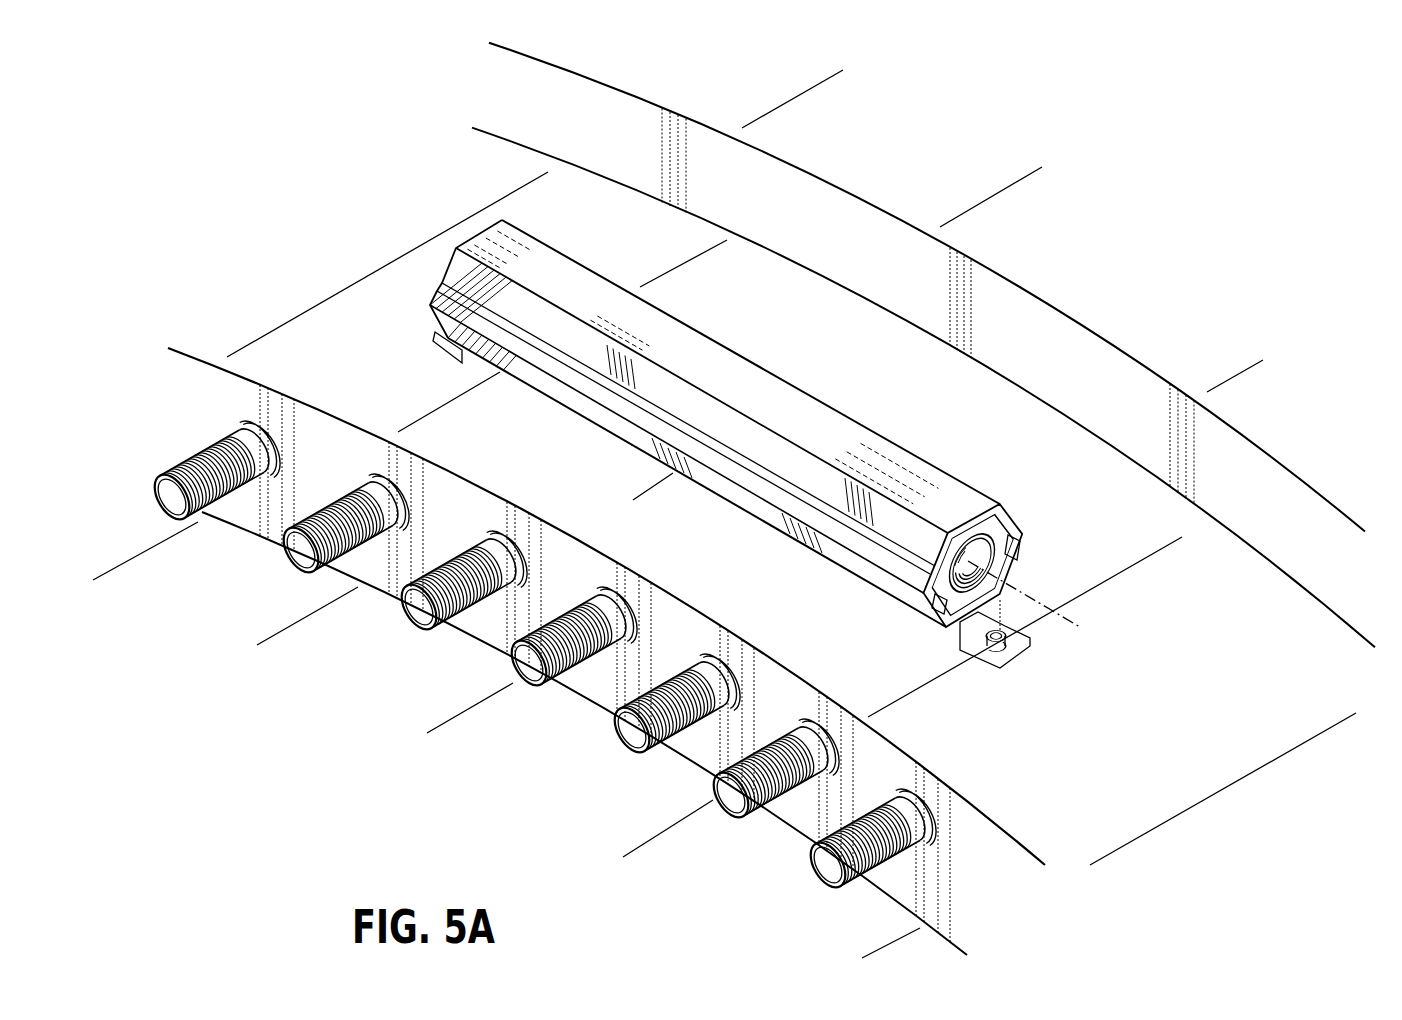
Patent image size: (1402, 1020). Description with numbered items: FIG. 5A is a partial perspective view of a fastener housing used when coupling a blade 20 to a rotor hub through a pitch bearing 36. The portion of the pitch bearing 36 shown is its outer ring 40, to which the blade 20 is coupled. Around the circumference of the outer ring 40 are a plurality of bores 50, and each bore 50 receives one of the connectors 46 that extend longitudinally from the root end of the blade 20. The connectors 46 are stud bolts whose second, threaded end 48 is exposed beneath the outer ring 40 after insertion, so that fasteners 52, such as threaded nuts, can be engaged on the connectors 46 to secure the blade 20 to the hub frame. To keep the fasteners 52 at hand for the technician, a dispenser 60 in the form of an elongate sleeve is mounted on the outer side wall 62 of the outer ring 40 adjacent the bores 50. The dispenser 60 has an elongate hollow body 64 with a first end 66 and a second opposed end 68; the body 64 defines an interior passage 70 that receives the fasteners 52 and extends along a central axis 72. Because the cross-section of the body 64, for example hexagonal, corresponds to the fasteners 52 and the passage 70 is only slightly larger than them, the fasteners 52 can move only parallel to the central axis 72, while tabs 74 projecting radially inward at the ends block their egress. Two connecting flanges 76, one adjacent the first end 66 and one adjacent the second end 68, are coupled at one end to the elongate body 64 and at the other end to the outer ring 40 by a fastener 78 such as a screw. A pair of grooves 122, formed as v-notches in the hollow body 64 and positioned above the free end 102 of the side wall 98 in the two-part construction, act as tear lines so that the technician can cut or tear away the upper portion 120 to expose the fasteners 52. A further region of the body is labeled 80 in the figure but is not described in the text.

The blade 20 is at (1060, 246).
The pitch bearing 36 is at (280, 134).
The outer ring 40 is at (252, 358).
The connectors 46 is at (190, 462).
The threaded end 48 is at (170, 503).
The bores 50 is at (262, 424).
The fasteners 52 is at (998, 542).
The dispenser 60 is at (459, 199).
The outer side wall 62 is at (1222, 789).
The elongate hollow body 64 is at (746, 360).
The first end 66 is at (1000, 527).
The second opposed end 68 is at (455, 256).
The interior passage 70 is at (1003, 590).
The central axis 72 is at (1080, 627).
The tabs 74 is at (1014, 555).
The connecting flanges 76 is at (435, 343).
The fastener 78 is at (1008, 636).
The lower face 80 is at (697, 488).
The side wall 98 is at (541, 386).
The free end 102 is at (618, 393).
The upper portion 120 is at (838, 428).
The grooves 122 is at (810, 492).